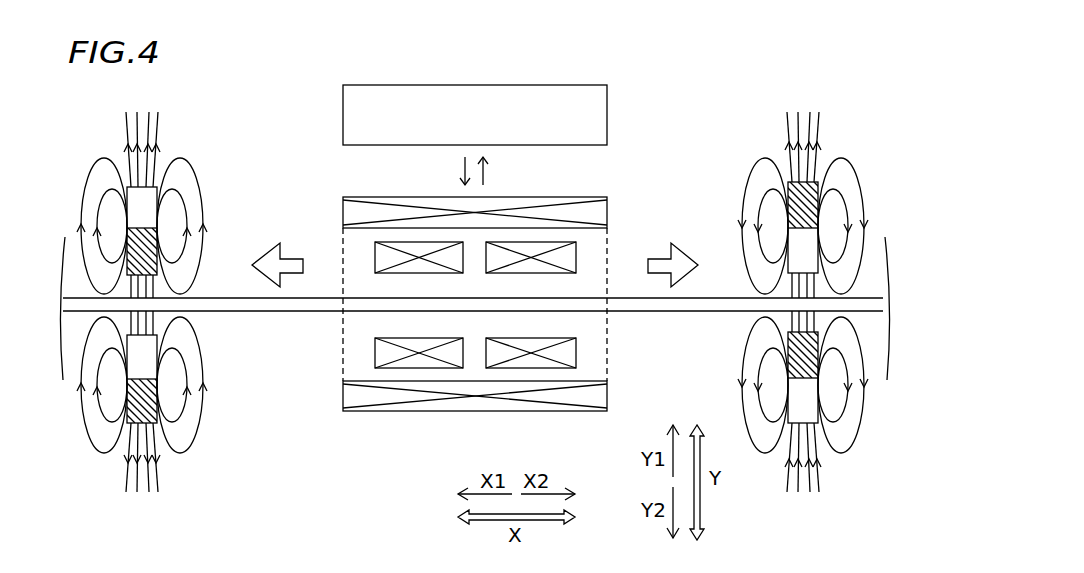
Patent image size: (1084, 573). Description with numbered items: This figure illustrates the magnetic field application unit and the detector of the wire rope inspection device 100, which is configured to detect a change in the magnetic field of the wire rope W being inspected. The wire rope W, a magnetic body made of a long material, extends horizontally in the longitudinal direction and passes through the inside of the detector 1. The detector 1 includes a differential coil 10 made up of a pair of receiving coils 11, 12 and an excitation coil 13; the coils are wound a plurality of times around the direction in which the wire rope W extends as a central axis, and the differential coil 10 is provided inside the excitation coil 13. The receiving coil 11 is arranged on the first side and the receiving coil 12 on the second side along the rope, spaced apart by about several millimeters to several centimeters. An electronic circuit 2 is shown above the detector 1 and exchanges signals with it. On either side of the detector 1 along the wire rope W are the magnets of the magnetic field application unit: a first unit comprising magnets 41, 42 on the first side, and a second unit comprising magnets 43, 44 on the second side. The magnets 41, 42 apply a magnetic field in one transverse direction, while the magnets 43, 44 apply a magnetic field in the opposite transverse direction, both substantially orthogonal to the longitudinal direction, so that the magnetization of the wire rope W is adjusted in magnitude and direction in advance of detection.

The wire rope inspection device 100 is at (712, 86).
The detector 1 is at (633, 372).
The electronic circuit 2 is at (573, 85).
The differential coil 10 is at (607, 330).
The receiving coil 11 is at (375, 256).
The receiving coil 12 is at (577, 256).
The excitation coil 13 is at (607, 208).
The magnet 41 is at (152, 220).
The magnet 42 is at (150, 388).
The magnet 43 is at (820, 218).
The magnet 44 is at (820, 392).
The wire rope W is at (297, 313).